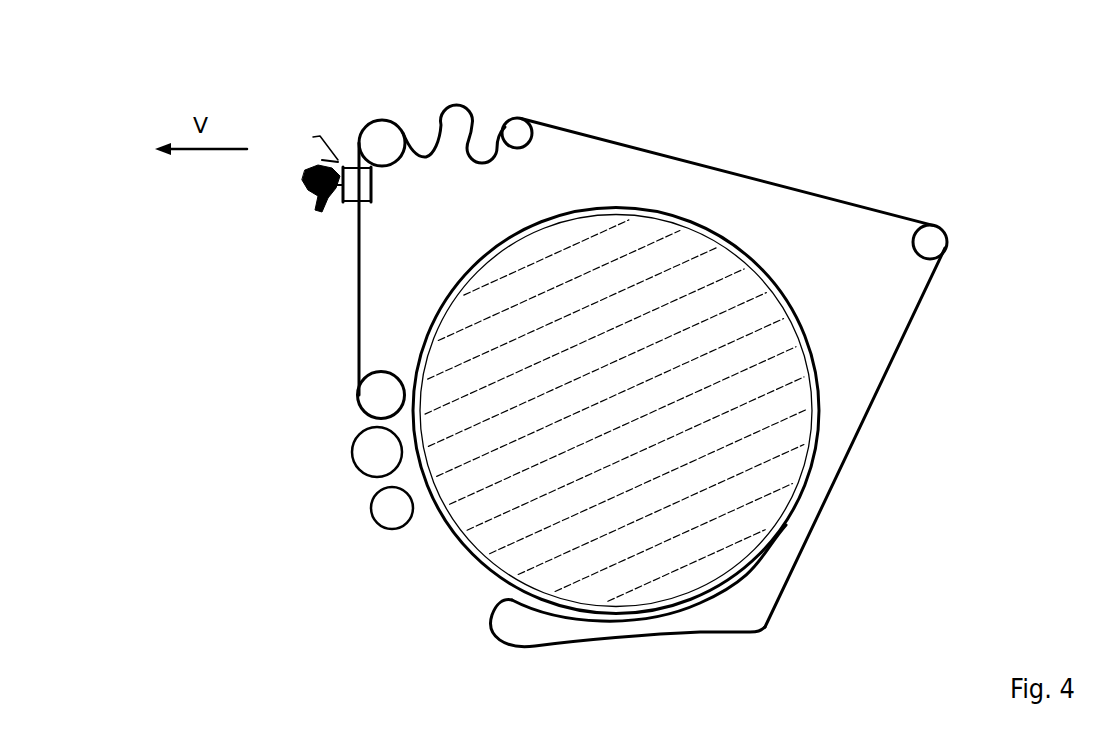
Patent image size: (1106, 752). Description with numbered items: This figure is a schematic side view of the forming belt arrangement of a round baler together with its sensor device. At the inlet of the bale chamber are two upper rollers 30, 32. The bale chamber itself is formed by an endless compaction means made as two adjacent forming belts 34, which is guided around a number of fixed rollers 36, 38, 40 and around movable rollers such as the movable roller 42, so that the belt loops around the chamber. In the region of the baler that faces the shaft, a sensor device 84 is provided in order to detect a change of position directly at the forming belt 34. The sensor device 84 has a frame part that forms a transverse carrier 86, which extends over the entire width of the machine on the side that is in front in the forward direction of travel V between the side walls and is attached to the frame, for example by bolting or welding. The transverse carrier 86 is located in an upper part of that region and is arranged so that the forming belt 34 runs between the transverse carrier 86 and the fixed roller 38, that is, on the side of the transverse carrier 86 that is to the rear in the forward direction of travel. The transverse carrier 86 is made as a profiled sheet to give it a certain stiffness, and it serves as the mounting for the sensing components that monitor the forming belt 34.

The upper roller 30 is at (388, 512).
The upper roller 32 is at (368, 452).
The forming belt 34 is at (748, 176).
The fixed roller 36 is at (382, 390).
The fixed roller 38 is at (388, 137).
The fixed roller 40 is at (513, 133).
The movable roller 42 is at (920, 232).
The sensor device 84 is at (278, 195).
The transverse carrier 86 is at (313, 137).